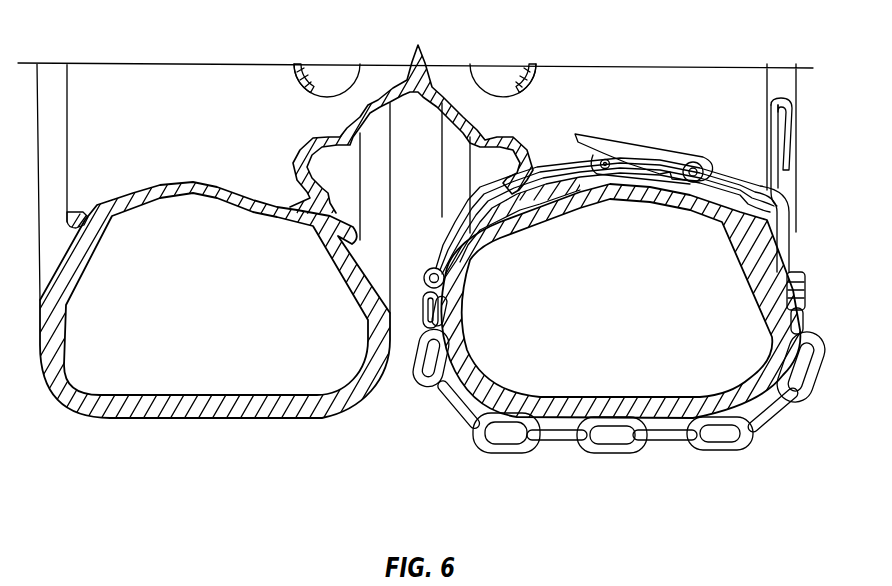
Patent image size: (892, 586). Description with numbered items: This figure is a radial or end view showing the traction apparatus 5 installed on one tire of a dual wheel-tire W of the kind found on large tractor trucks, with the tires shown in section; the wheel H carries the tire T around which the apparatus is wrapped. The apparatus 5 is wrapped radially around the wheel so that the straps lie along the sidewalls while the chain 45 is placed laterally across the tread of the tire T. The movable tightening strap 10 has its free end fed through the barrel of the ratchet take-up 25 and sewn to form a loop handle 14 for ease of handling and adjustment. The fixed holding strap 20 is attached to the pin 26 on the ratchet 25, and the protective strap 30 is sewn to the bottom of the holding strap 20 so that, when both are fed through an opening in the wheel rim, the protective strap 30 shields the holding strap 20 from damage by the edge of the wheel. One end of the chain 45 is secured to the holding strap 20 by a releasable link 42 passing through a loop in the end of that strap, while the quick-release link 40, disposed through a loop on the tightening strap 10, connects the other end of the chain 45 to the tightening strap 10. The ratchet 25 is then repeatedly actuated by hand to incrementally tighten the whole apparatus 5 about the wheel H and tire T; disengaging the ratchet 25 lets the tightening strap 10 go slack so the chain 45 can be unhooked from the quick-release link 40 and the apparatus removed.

The traction apparatus 5 is at (782, 440).
The tightening strap 10 is at (793, 228).
The loop handle 14 is at (792, 117).
The holding strap 20 is at (520, 210).
The ratchet take-up 25 is at (663, 153).
The pin 26 is at (610, 170).
The protective strap 30 is at (503, 220).
The quick-release link 40 is at (808, 308).
The releasable link 42 is at (415, 343).
The chain 45 is at (670, 437).
The wheel well W is at (610, 83).
The hub H is at (525, 160).
The tire T is at (625, 321).